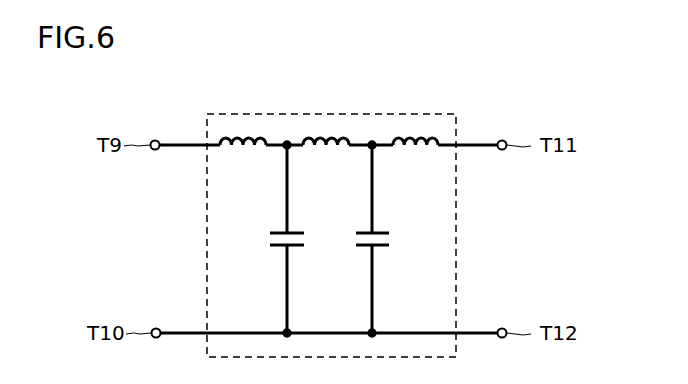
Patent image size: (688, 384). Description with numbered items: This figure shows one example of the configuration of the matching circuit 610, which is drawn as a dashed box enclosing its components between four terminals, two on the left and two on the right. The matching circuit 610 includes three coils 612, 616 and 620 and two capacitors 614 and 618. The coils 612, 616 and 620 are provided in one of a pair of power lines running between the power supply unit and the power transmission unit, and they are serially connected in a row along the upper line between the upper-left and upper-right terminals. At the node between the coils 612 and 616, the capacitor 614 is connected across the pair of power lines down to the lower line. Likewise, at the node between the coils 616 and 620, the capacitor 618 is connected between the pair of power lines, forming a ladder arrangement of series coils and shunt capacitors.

The matching circuit 610 is at (370, 113).
The coil 612 is at (236, 129).
The capacitor 614 is at (295, 229).
The coil 616 is at (319, 129).
The capacitor 618 is at (383, 229).
The coil 620 is at (409, 129).